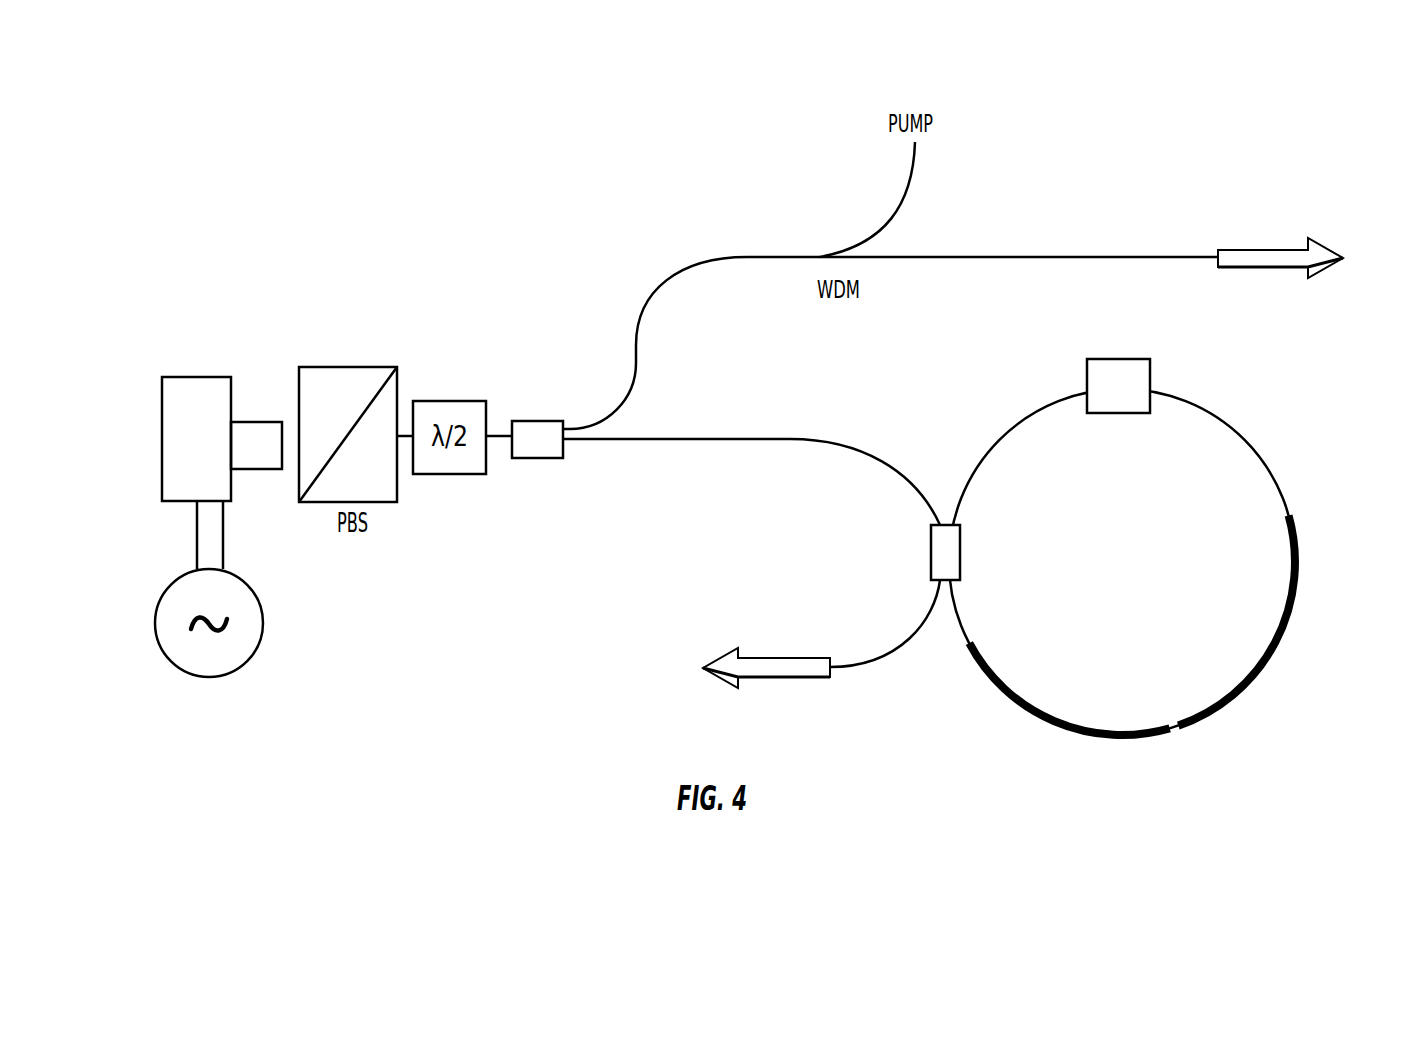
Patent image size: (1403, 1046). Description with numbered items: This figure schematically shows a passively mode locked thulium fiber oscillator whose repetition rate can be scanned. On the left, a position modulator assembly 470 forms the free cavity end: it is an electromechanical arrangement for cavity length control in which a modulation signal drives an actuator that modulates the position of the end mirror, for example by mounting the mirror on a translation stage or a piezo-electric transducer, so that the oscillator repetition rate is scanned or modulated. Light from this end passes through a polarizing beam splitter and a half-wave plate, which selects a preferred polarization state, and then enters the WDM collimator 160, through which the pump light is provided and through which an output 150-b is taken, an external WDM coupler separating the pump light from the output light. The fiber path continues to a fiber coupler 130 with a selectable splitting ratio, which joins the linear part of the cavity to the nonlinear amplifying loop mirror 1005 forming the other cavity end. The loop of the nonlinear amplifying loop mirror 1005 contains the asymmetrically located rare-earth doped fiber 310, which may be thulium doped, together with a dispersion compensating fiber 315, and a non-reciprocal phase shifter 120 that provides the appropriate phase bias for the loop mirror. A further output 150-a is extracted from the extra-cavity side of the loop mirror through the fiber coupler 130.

The position modulator assembly 470 is at (157, 365).
The WDM collimator 160 is at (545, 408).
The output 150-b is at (1322, 223).
The extra-cavity NALM output 150-a is at (727, 692).
The nonlinear amplifying loop mirror 1005 is at (1285, 703).
The dispersion compensating fiber 315 is at (1295, 607).
The rare-earth doped fiber 310 is at (1017, 705).
The non-reciprocal phase shifter 120 is at (1123, 359).
The fiber coupler 130 is at (931, 548).